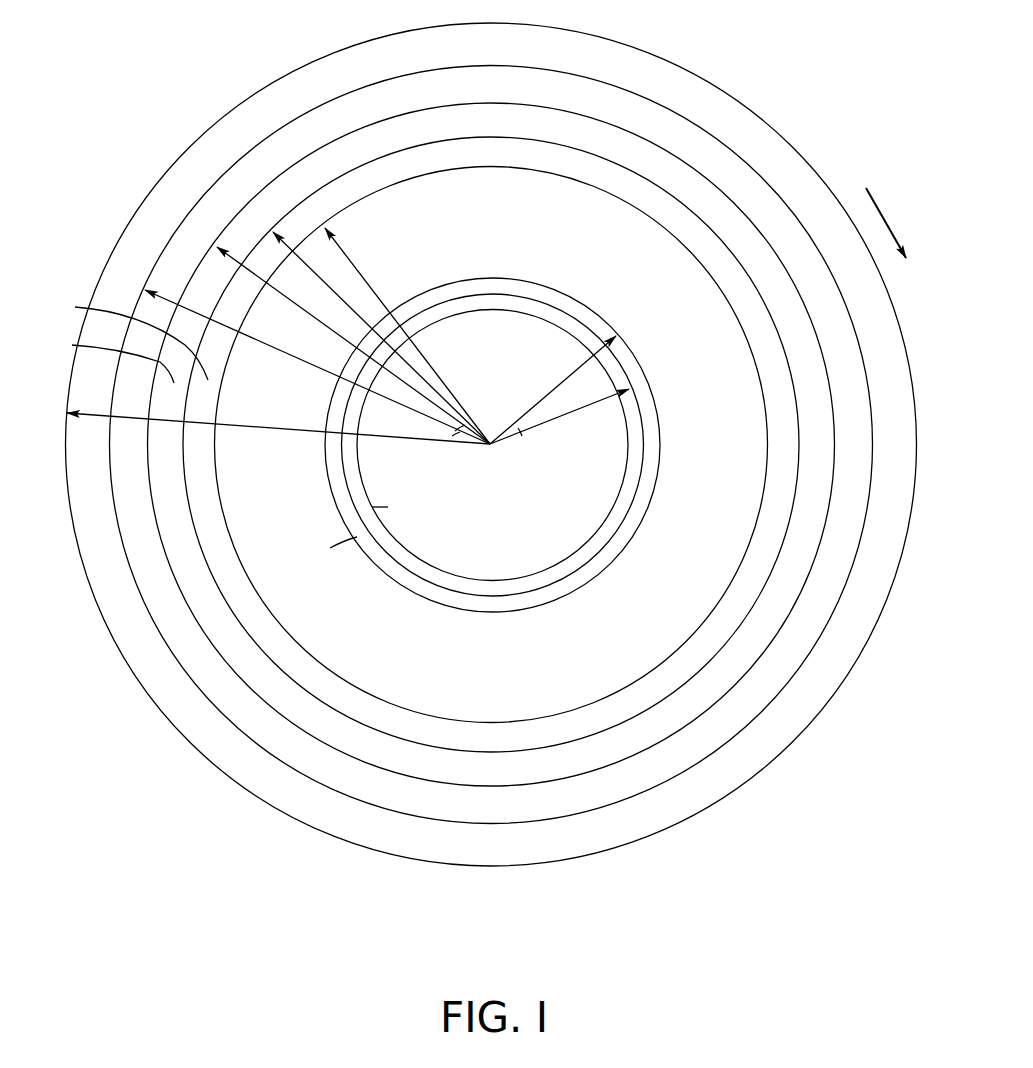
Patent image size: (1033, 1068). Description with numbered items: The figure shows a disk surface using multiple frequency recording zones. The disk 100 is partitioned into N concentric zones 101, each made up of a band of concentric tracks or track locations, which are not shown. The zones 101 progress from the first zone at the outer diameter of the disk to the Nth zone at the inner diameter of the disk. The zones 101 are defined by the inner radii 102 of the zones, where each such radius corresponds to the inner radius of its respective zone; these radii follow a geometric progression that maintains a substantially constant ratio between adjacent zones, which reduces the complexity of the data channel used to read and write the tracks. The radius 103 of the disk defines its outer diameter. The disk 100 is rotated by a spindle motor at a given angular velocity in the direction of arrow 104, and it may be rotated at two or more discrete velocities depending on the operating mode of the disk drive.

The disk 100 is at (699, 39).
The zones 101 is at (455, 772).
The inner radii 102 is at (452, 437).
The radius of the disk 103 is at (310, 432).
The arrow 104 is at (873, 197).